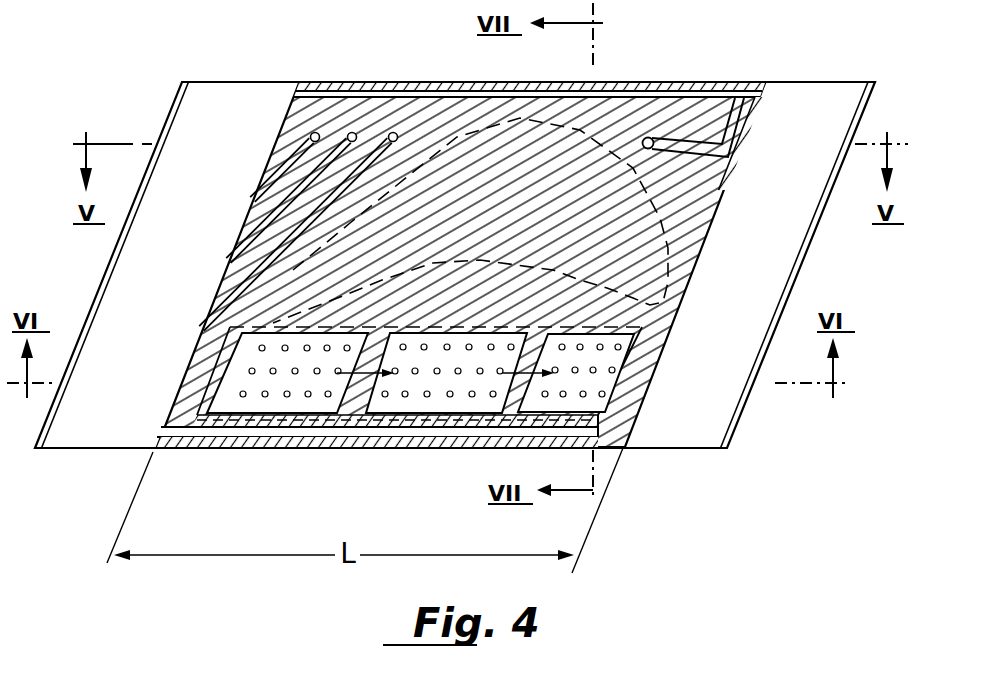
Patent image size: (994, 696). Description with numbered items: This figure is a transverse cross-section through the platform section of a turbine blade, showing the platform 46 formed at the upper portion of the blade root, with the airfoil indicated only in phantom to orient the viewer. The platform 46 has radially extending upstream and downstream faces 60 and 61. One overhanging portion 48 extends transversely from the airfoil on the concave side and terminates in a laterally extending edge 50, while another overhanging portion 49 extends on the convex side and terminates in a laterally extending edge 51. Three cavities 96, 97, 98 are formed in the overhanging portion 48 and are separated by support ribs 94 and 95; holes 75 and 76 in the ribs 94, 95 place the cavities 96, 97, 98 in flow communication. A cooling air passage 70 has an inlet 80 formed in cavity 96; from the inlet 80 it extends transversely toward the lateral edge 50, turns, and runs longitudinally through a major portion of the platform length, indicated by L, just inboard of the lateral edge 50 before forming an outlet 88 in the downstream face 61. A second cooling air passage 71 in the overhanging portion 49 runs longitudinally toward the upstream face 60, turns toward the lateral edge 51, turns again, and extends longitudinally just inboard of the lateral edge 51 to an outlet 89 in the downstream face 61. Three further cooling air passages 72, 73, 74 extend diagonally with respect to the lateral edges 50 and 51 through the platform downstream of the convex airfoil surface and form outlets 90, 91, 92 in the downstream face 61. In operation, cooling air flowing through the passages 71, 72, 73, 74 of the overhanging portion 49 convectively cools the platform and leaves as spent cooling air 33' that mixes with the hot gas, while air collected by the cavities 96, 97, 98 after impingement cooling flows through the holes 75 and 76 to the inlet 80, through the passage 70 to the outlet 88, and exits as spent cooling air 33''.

The platform portion 46 is at (698, 448).
The overhanging portion 48 is at (173, 443).
The overhanging portion 49 is at (728, 84).
The lateral edge 50 is at (238, 449).
The lateral edge 51 is at (445, 82).
The upstream face 60 is at (718, 214).
The downstream face 61 is at (270, 160).
The cooling air passage 70 is at (272, 425).
The cooling air passage 71 is at (682, 85).
The cooling air passage 72 is at (372, 146).
The cooling air passage 73 is at (334, 146).
The cooling air passage 74 is at (307, 152).
The hole 75 is at (527, 430).
The hole 76 is at (362, 400).
The inlet 80 is at (600, 412).
The outlet 88 is at (157, 448).
The outlet 89 is at (297, 93).
The outlet 90 is at (200, 337).
The outlet 91 is at (230, 264).
The outlet 92 is at (252, 200).
The support rib 94 is at (518, 405).
The support rib 95 is at (333, 410).
The cavity 96 is at (612, 358).
The cavity 97 is at (422, 425).
The cavity 98 is at (230, 412).
The spent cooling air 33' is at (199, 204).
The spent cooling air 33'' is at (123, 407).